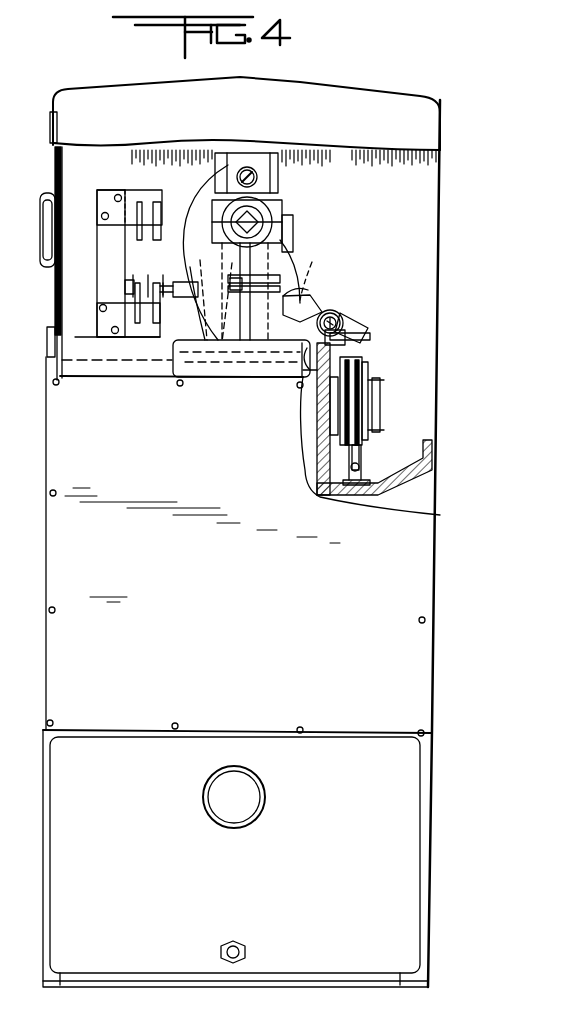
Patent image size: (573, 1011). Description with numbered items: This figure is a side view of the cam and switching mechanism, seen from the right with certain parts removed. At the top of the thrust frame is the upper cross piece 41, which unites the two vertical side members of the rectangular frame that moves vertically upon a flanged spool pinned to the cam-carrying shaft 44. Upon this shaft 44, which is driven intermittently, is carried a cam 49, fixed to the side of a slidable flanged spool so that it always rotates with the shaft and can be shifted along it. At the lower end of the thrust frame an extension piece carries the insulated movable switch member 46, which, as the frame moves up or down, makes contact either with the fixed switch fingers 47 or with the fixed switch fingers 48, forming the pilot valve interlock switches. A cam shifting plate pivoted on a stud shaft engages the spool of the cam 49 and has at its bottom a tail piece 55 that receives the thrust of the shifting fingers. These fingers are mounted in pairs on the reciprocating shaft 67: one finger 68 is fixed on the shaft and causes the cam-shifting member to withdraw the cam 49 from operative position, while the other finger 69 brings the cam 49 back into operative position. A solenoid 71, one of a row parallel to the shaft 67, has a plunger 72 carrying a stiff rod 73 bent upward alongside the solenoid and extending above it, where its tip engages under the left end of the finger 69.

The upper cross piece 41 is at (262, 162).
The cam-carrying shaft 44 is at (252, 218).
The insulated movable switch member 46 is at (174, 297).
The fixed switch fingers 47 is at (153, 237).
The fixed switch fingers 48 is at (155, 312).
The cam 49 is at (203, 222).
The tail piece 55 is at (290, 335).
The reciprocating shaft 67 is at (333, 318).
The shifting finger 68 is at (306, 271).
The shifting finger 69 is at (300, 305).
The solenoid 71 is at (365, 405).
The plunger 72 is at (366, 460).
The stiff rod 73 is at (372, 345).